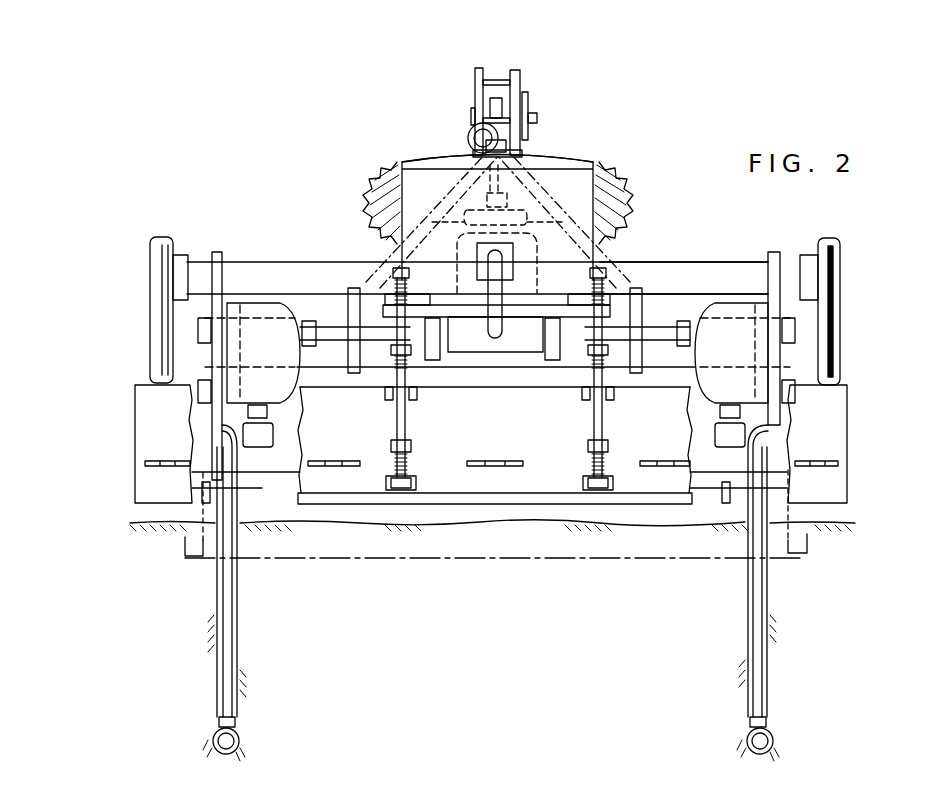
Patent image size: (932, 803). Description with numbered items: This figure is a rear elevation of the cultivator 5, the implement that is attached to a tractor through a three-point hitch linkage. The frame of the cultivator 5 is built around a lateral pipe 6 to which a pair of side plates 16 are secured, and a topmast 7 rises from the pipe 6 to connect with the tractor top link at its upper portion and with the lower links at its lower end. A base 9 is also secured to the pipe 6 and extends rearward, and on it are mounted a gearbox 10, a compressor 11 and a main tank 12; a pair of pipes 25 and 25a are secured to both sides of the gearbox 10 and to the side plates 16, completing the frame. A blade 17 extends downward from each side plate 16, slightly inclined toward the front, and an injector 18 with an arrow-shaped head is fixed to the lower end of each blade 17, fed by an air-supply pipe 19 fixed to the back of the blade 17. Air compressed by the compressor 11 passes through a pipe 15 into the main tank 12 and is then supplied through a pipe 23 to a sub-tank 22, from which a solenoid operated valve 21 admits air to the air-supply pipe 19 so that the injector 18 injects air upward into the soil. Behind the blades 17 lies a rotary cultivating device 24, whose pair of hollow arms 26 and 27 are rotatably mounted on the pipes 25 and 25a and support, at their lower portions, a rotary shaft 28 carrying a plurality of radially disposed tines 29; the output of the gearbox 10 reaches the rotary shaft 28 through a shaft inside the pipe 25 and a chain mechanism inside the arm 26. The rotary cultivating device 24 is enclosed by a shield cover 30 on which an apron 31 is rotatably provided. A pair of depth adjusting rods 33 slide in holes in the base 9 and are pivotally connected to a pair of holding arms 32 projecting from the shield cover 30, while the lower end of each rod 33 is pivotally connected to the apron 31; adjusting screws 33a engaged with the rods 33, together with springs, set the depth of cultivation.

The cultivator 5 is at (600, 158).
The lateral pipe 6 is at (514, 360).
The topmast 7 is at (519, 80).
The base 9 is at (615, 300).
The gearbox 10 is at (540, 258).
The compressor 11 is at (372, 195).
The main tank 12 is at (556, 157).
The pipe 15 is at (466, 140).
The side plate 16 is at (219, 253).
The blade 17 is at (239, 648).
The injector 18 is at (239, 741).
The air-supply pipe 19 is at (230, 613).
The solenoid operated valve 21 is at (262, 440).
The sub-tank 22 is at (268, 407).
The pipe 23 is at (340, 336).
The rotary cultivating device 24 is at (136, 452).
The pipe 25 is at (300, 262).
The pipe 25a is at (707, 263).
The hollow arm 26 is at (150, 345).
The hollow arm 27 is at (836, 336).
The rotary shaft 28 is at (262, 485).
The tine 29 is at (185, 549).
The shield cover 30 is at (552, 451).
The apron 31 is at (494, 506).
The holding arm 32 is at (385, 397).
The depth adjusting rod 33 is at (394, 436).
The adjusting screw 33a is at (395, 275).